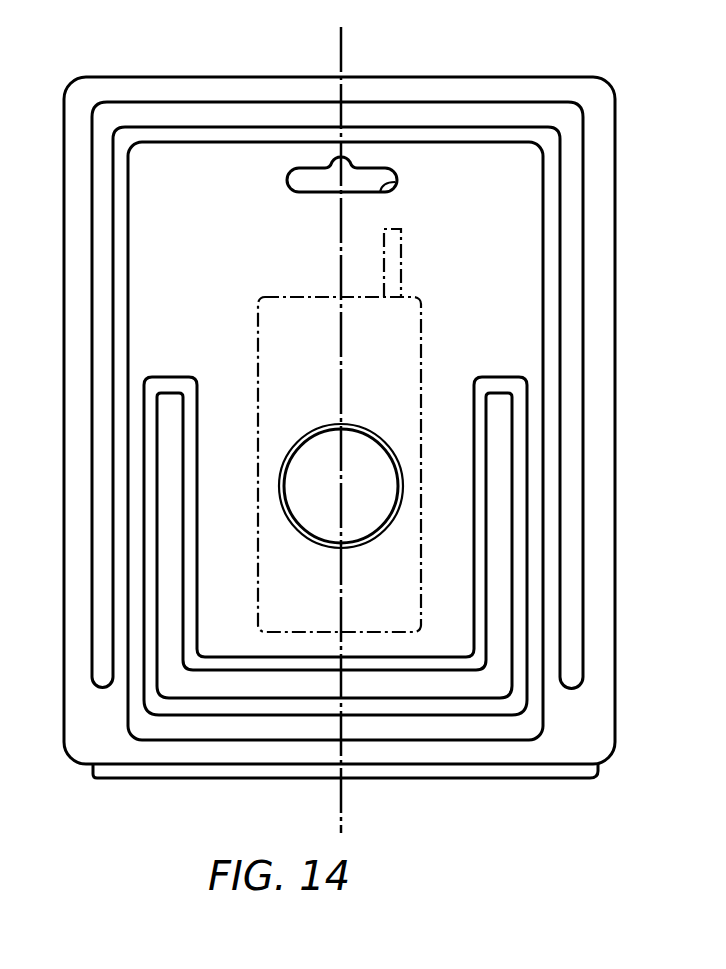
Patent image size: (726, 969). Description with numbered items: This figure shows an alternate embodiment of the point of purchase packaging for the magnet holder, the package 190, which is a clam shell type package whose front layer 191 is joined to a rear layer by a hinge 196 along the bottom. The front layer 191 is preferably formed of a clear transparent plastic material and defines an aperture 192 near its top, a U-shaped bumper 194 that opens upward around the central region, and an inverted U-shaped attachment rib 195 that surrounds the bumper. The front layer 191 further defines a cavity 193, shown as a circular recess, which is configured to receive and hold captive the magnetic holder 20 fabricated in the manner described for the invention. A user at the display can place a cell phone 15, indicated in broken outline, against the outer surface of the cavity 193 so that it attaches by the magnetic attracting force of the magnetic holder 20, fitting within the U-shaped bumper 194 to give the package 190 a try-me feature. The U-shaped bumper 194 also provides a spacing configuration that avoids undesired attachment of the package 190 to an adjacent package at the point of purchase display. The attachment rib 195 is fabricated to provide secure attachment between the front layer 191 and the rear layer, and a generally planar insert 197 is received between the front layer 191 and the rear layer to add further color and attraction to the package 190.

The cell phone 15 is at (257, 313).
The magnetic holder 20 is at (398, 481).
The package 190 is at (690, 360).
The front layer 191 is at (597, 193).
The aperture 192 is at (397, 180).
The cavity 193 is at (381, 437).
The U-shaped bumper 194 is at (540, 502).
The inverted U-shaped attachment rib 195 is at (587, 593).
The hinge 196 is at (598, 771).
The planar insert 197 is at (525, 143).